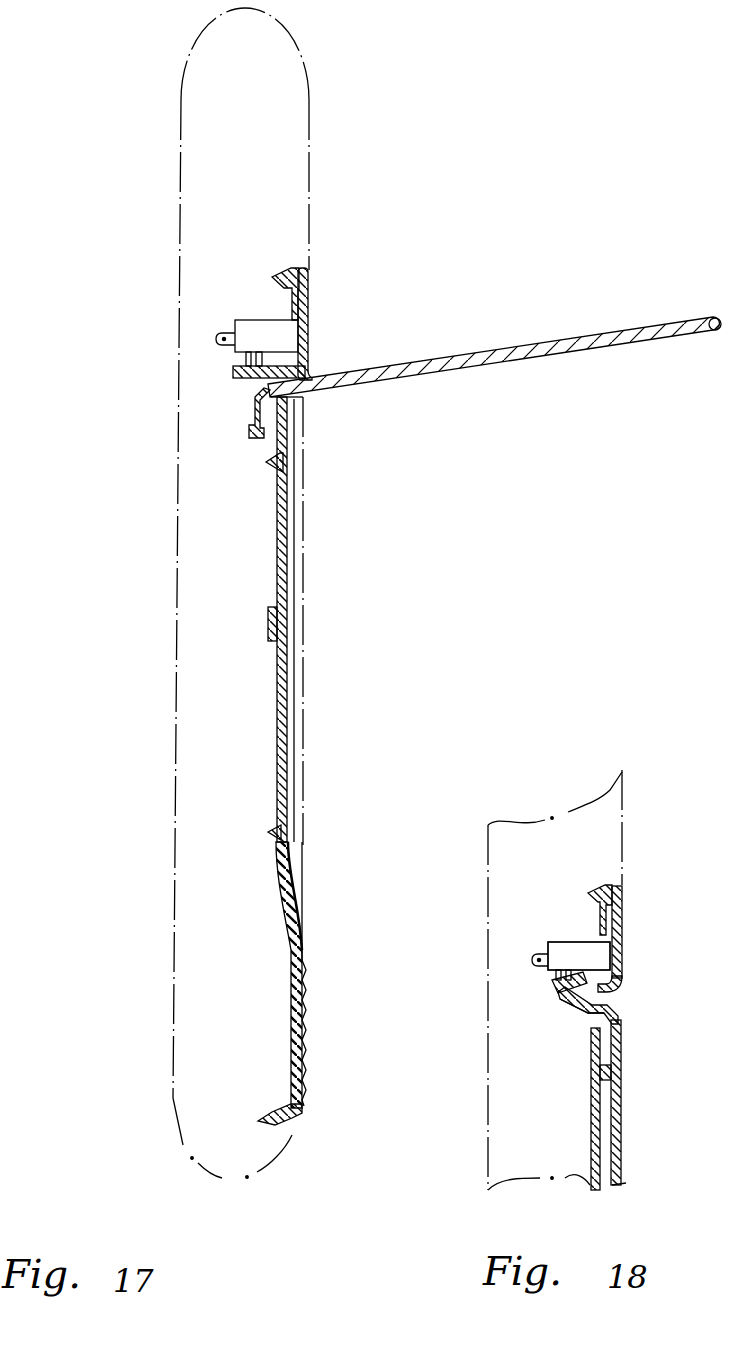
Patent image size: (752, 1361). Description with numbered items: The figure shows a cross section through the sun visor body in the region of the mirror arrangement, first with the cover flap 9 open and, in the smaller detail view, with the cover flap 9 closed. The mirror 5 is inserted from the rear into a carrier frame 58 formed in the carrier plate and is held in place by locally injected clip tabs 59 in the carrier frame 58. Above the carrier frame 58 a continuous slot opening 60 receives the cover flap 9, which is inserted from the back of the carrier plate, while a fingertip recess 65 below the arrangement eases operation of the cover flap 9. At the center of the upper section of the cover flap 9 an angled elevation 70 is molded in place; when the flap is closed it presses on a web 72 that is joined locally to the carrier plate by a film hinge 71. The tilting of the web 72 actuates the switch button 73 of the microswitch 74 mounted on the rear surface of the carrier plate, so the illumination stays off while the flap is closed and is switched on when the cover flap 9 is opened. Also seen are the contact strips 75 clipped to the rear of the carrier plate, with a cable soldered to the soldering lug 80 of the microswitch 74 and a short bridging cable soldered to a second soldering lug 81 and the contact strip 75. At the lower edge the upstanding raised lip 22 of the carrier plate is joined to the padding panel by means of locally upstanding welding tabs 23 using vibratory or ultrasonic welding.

In FIG. 17, the mirror 5 is at (290, 664).
In FIG. 17, the cover flap 9 is at (660, 319).
In FIG. 17, the raised lip 22 is at (297, 1130).
In FIG. 17, the welding tabs 23 is at (270, 1120).
In FIG. 17, the carrier frame 58 is at (302, 467).
In FIG. 17, the clip tabs 59 is at (270, 829).
In FIG. 18, the slot opening 60 is at (600, 1035).
In FIG. 17, the fingertip recess 65 is at (303, 870).
In FIG. 17, the angled elevation 70 is at (253, 420).
In FIG. 18, the angled elevation 70 is at (592, 1012).
In FIG. 17, the film hinge 71 is at (265, 390).
In FIG. 18, the film hinge 71 is at (622, 995).
In FIG. 18, the web 72 is at (576, 1000).
In FIG. 17, the switch button 73 is at (240, 357).
In FIG. 18, the switch button 73 is at (556, 980).
In FIG. 17, the microswitch 74 is at (262, 320).
In FIG. 17, the contact strips 75 is at (310, 290).
In FIG. 18, the soldering lug 80 is at (548, 960).
In FIG. 18, the soldering lug 81 is at (579, 956).